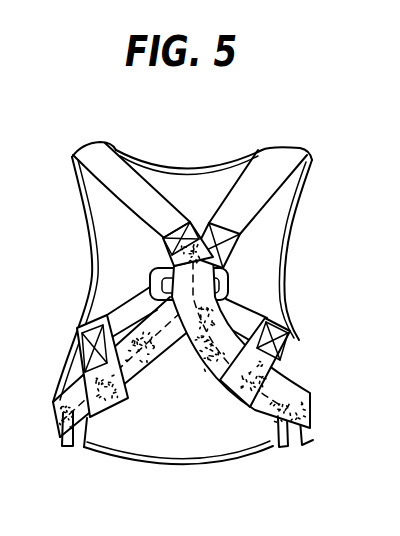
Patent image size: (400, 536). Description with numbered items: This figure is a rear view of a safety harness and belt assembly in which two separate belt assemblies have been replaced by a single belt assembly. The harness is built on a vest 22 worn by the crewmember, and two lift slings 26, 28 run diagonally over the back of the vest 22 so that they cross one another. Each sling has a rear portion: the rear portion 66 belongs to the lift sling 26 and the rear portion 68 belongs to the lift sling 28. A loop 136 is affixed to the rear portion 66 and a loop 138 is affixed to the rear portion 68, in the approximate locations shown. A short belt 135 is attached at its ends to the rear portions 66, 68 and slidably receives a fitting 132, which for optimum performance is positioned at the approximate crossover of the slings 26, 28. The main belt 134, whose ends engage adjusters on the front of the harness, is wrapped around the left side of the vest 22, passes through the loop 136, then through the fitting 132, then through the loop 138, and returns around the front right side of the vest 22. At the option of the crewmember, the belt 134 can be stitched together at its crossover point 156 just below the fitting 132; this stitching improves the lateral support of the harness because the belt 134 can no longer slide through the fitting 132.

The vest 22 is at (191, 178).
The lift sling 26 is at (100, 160).
The lift sling 28 is at (272, 177).
The short belt 135 is at (164, 255).
The fitting 132 is at (231, 276).
The crossover point 156 is at (228, 311).
The rear portion 66 is at (124, 311).
The belt 134 is at (156, 368).
The loop 138 is at (229, 397).
The loop 136 is at (121, 401).
The rear portion 68 is at (308, 354).